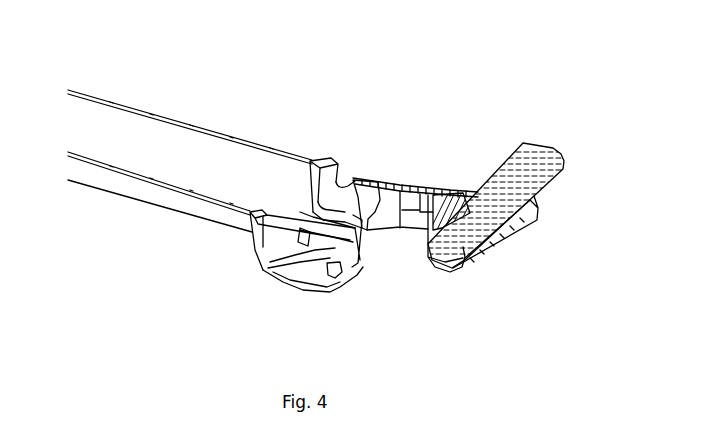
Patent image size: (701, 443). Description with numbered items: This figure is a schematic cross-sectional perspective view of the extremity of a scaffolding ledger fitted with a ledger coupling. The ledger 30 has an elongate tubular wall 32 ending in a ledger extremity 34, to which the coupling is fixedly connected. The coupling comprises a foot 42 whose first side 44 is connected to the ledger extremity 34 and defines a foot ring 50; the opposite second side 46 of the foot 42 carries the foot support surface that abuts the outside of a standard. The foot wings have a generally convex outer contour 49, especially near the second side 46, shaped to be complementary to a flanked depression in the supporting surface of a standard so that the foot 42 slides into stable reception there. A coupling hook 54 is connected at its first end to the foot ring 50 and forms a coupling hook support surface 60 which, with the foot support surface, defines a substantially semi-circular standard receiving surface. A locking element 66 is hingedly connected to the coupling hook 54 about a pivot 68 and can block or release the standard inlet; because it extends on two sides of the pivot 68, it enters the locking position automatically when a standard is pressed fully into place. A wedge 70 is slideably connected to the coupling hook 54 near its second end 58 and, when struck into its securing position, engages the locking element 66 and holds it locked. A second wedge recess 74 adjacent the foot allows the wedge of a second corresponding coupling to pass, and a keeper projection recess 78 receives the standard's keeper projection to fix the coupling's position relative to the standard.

The ledger 30 is at (90, 80).
The elongate tubular wall 32 is at (158, 187).
The ledger extremity 34 is at (303, 157).
The foot 42 is at (288, 302).
The first side 44 is at (248, 257).
The second side 46 is at (333, 297).
The outer contour 49 is at (357, 267).
The foot ring 50 is at (335, 177).
The coupling hook 54 is at (432, 147).
The second end 58 is at (508, 253).
The coupling hook support surface 60 is at (390, 210).
The locking element 66 is at (453, 266).
The pivot 68 is at (462, 188).
The wedge 70 is at (565, 178).
The second wedge recess 74 is at (345, 180).
The keeper projection recess 78 is at (343, 278).